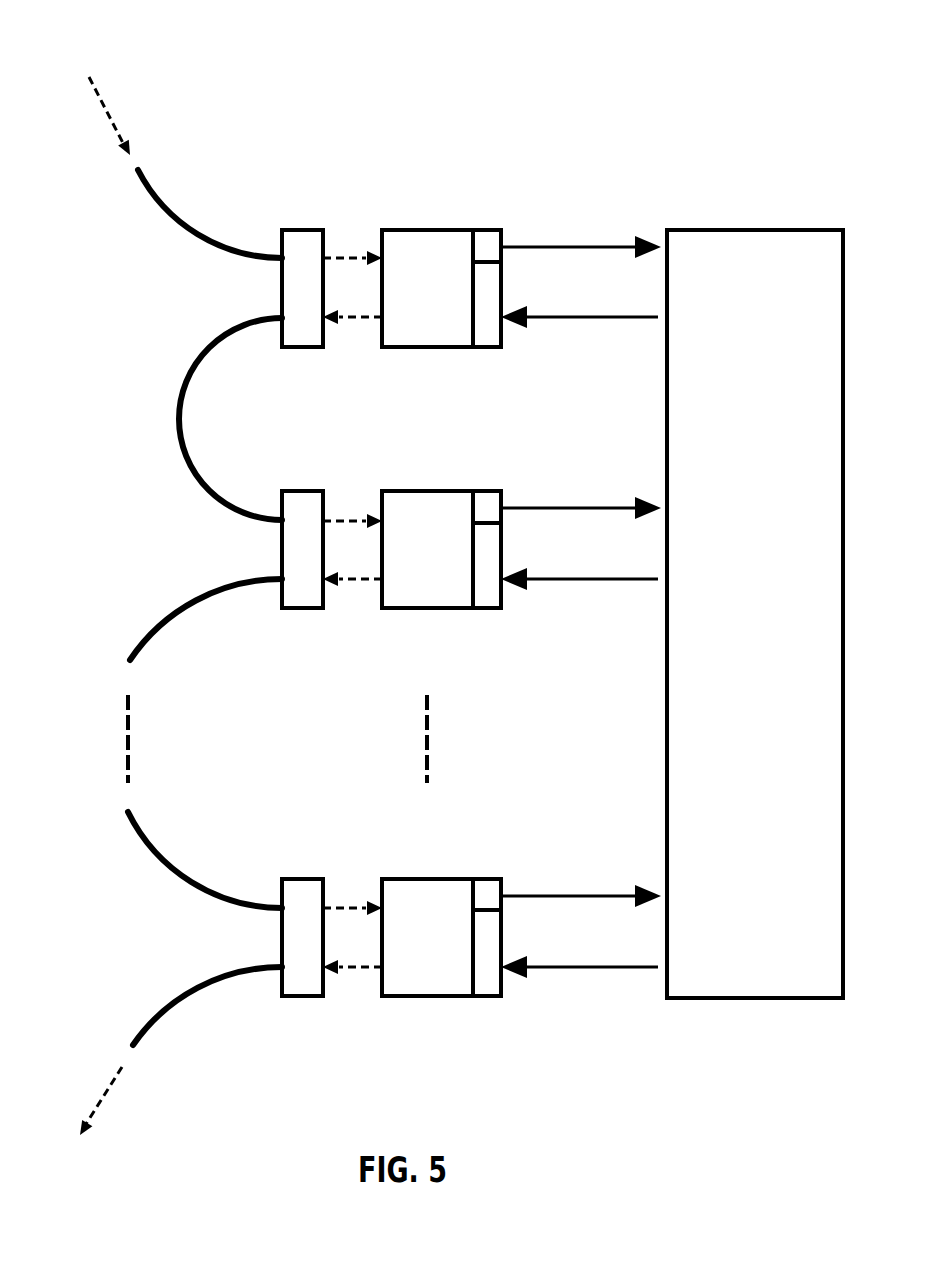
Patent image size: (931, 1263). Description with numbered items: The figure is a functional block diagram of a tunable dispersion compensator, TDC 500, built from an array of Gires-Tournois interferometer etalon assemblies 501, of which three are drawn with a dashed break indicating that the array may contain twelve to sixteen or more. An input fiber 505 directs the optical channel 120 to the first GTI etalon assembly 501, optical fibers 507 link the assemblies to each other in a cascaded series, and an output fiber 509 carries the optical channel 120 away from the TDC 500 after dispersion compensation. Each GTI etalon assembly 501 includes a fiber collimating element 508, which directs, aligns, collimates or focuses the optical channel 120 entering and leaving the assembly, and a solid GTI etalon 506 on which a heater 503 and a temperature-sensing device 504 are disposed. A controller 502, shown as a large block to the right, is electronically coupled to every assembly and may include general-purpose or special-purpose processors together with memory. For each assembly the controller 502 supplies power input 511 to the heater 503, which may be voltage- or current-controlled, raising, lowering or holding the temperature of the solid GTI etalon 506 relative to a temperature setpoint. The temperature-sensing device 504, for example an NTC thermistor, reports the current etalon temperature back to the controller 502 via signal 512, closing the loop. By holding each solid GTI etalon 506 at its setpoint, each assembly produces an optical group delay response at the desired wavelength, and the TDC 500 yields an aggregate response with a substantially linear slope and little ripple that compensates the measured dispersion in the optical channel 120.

The TDC 500 is at (319, 103).
The optical channel 120 is at (103, 98).
The GTI etalon assembly 501 is at (497, 396).
The controller 502 is at (735, 631).
The heater 503 is at (490, 349).
The temperature-sensing device 504 is at (441, 285).
The input fiber 505 is at (178, 218).
The solid GTI etalon 506 is at (410, 348).
The optical fibers 507 is at (185, 392).
The fiber collimating element 508 is at (302, 230).
The output fiber 509 is at (165, 1008).
The power input 511 is at (610, 318).
The signal 512 is at (597, 247).